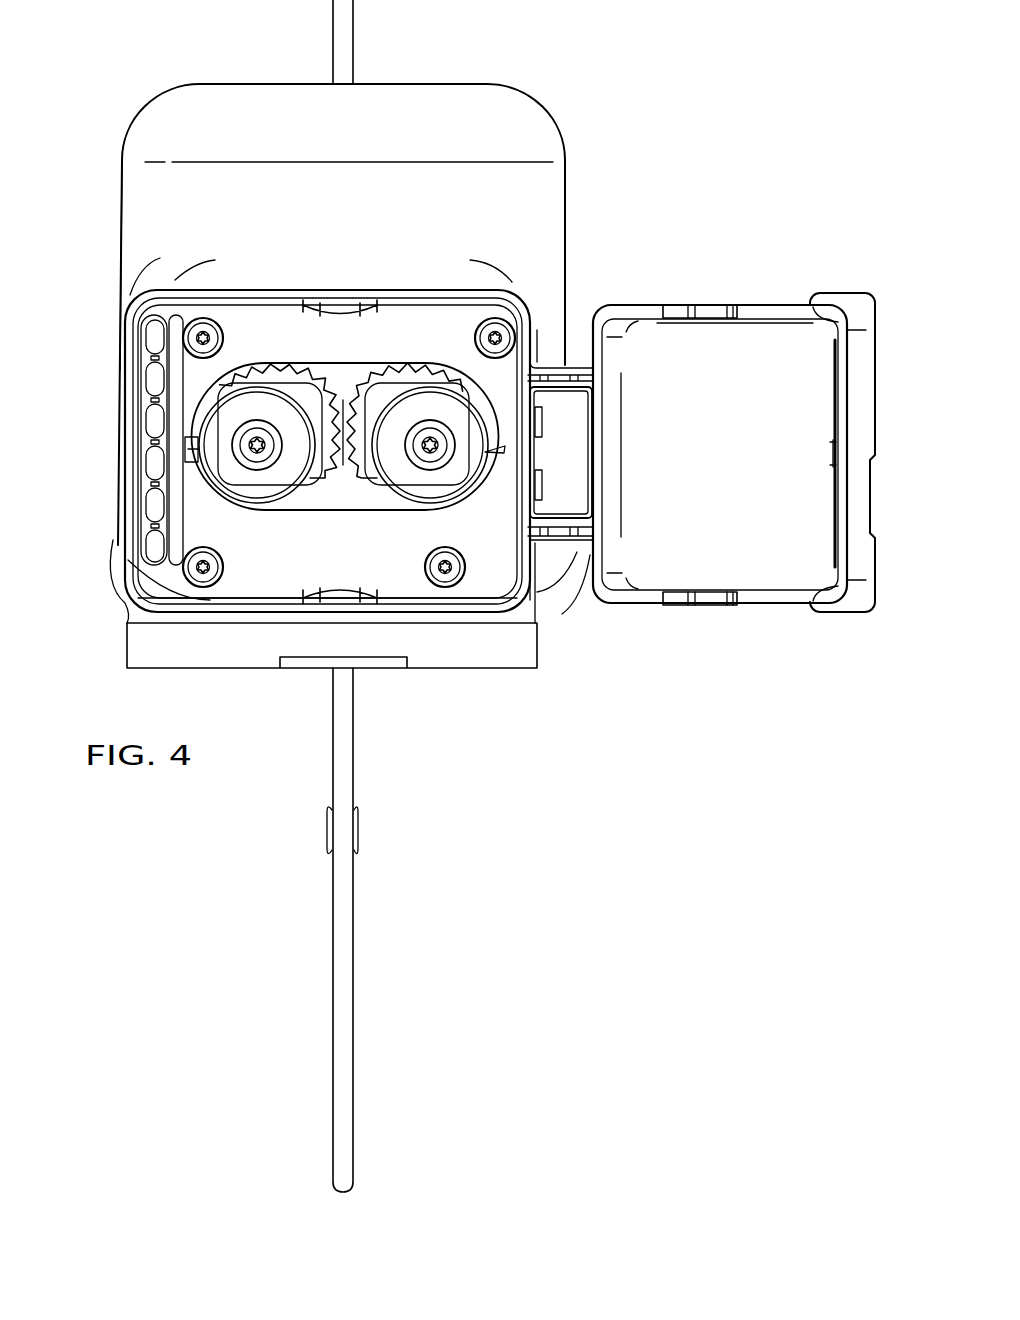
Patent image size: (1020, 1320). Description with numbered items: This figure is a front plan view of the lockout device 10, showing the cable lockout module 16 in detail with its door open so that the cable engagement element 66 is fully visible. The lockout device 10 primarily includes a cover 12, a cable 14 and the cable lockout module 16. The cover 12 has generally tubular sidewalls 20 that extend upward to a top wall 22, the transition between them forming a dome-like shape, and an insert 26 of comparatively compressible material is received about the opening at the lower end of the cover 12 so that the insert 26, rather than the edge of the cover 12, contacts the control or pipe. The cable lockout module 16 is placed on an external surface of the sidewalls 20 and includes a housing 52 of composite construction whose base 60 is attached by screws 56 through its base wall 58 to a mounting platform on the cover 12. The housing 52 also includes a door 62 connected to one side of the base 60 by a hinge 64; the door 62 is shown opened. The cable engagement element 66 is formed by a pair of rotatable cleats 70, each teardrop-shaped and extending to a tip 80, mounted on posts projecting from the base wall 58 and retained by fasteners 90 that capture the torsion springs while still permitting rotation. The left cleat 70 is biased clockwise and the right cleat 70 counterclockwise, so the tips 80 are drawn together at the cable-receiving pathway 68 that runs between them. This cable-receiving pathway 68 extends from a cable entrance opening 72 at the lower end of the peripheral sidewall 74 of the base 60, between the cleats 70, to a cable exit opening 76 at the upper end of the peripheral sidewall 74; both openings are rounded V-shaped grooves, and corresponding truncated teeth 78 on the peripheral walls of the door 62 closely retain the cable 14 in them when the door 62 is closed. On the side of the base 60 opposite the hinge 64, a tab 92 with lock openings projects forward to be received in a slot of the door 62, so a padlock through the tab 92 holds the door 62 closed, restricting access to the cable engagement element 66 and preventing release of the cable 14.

The lockout device 10 is at (640, 90).
The cover 12 is at (532, 205).
The cable 14 is at (353, 965).
The cable lockout module 16 is at (575, 560).
The sidewalls 20 is at (152, 214).
The top wall 22 is at (398, 84).
The insert 26 is at (473, 650).
The housing 52 is at (600, 290).
The screws 56 is at (205, 332).
The base wall 58 is at (262, 573).
The base 60 is at (288, 567).
The door 62 is at (765, 567).
The hinge 64 is at (578, 448).
The cable engagement element 66 is at (346, 520).
The cable-receiving pathway 68 is at (345, 412).
The rotatable cleats 70 is at (296, 390).
The cable entrance opening 72 is at (338, 598).
The peripheral sidewall 74 is at (413, 598).
The cable exit opening 76 is at (349, 307).
The truncated teeth 78 is at (690, 306).
The tip 80 is at (333, 395).
The fasteners 90 is at (257, 462).
The tab 92 is at (165, 567).